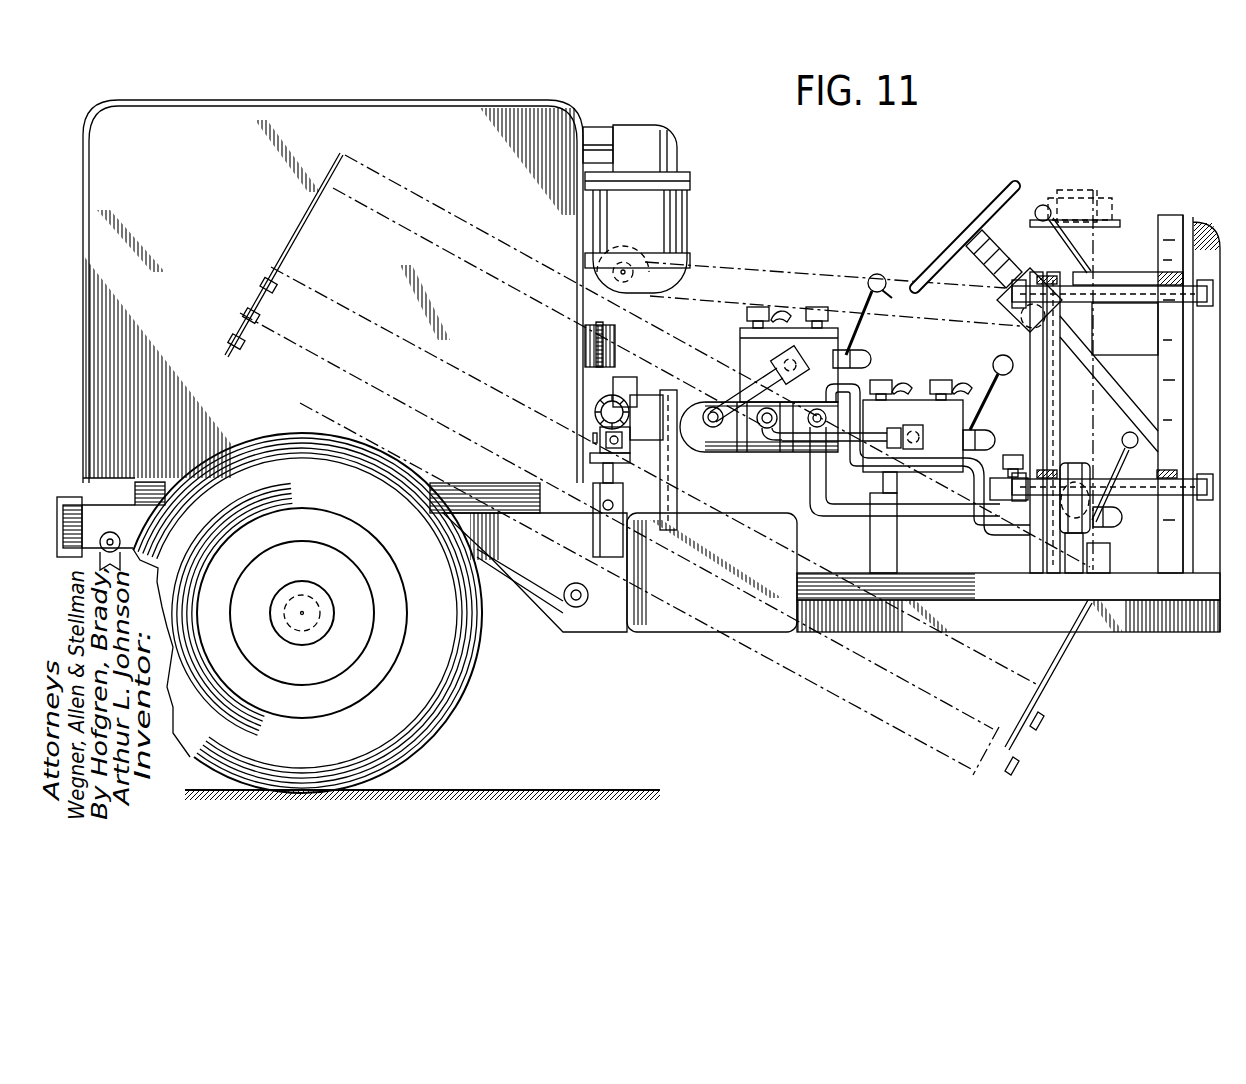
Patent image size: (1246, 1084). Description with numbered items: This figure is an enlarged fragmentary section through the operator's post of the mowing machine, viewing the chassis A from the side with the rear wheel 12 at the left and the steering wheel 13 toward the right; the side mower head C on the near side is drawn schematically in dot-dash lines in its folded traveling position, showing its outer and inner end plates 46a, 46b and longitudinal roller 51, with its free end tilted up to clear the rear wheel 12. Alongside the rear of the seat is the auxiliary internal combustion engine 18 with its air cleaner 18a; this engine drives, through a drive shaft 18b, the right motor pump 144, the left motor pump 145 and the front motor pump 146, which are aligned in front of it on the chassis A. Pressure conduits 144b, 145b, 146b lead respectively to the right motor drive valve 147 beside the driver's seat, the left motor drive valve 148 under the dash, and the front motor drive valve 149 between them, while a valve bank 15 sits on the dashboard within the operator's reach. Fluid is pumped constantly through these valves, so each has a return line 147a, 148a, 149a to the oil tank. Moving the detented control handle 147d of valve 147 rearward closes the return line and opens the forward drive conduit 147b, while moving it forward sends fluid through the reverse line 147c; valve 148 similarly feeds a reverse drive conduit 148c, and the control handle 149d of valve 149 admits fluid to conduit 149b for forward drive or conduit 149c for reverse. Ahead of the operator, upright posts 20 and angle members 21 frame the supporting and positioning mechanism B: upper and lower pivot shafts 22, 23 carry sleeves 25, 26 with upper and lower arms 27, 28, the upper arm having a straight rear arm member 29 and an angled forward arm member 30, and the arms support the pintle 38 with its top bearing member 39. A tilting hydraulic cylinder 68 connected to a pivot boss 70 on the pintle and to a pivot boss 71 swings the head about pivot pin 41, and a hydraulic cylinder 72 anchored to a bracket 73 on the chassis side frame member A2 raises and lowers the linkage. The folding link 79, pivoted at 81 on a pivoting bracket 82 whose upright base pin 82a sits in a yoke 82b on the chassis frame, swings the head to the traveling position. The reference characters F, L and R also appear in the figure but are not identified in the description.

The rear wheel 12 is at (478, 672).
The steering wheel 13 is at (1015, 180).
The valve bank 15 is at (1140, 353).
The auxiliary internal combustion engine 18 is at (453, 101).
The air cleaner 18a is at (640, 125).
The drive shaft 18b is at (655, 395).
The upright posts 20 is at (1030, 388).
The angle members 21 is at (1173, 222).
The upper longitudinal pivot shaft 22 is at (1000, 288).
The lower longitudinal pivot shaft 23 is at (985, 483).
The upper sleeve 25 is at (1112, 306).
The lower sleeve 26 is at (1150, 480).
The upper arm 27 is at (1048, 272).
The lower arm 28 is at (1052, 470).
The rear arm member 29 is at (1048, 265).
The forward arm member 30 is at (1158, 275).
The pintle 38 is at (1093, 192).
The top bearing member 39 is at (1112, 202).
The pivot pin 41 is at (1034, 505).
The outer end plate 46a is at (1060, 675).
The inner end plate 46b is at (285, 246).
The longitudinal roller 51 is at (828, 676).
The hydraulic cylinder 68 is at (730, 266).
The pivot boss 70 is at (1010, 320).
The pivot boss 71 is at (605, 270).
The hydraulic cylinder 72 is at (1090, 470).
The bracket 73 is at (1105, 553).
The folding link 79 is at (595, 407).
The pivot 81 is at (600, 432).
The pivoting bracket 82 is at (592, 438).
The upright base pin 82a is at (590, 458).
The yoke 82b is at (592, 497).
The right motor pump 144 is at (716, 440).
The pressure conduit 144b is at (752, 375).
The left motor pump 145 is at (832, 452).
The pressure conduit 145b is at (862, 518).
The front motor pump 146 is at (762, 432).
The pressure conduit 146b is at (812, 462).
The right motor drive valve 147 is at (738, 345).
The return line 147a is at (879, 348).
The forward drive conduit 147b is at (870, 276).
The reverse line 147c is at (782, 312).
The control handle 147d is at (884, 278).
The left motor drive valve 148 is at (1010, 545).
The return line 148a is at (1129, 528).
The reverse drive conduit 148c is at (1003, 460).
The front motor drive valve 149 is at (935, 462).
The return line 149a is at (985, 430).
The conduit 149b is at (959, 375).
The conduit 149c is at (906, 375).
The control handle 149d is at (1003, 355).
The chassis A is at (683, 635).
The chassis side frame member A2 is at (905, 576).
The supporting and positioning mechanism B is at (1108, 270).
The side mower head C is at (455, 210).
The fitting F is at (948, 326).
The brace L is at (1109, 380).
The cable run R is at (790, 252).